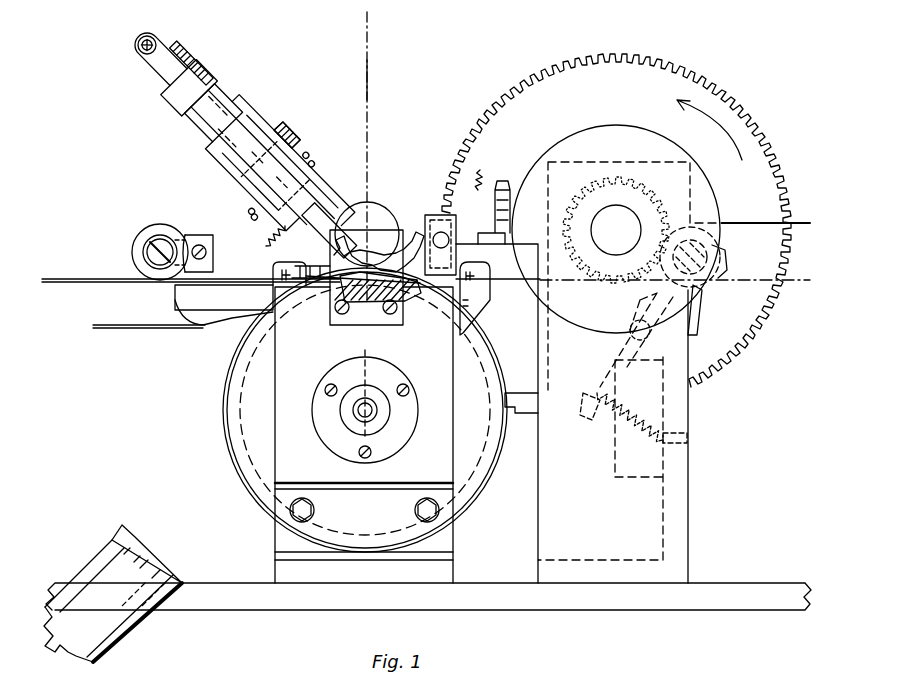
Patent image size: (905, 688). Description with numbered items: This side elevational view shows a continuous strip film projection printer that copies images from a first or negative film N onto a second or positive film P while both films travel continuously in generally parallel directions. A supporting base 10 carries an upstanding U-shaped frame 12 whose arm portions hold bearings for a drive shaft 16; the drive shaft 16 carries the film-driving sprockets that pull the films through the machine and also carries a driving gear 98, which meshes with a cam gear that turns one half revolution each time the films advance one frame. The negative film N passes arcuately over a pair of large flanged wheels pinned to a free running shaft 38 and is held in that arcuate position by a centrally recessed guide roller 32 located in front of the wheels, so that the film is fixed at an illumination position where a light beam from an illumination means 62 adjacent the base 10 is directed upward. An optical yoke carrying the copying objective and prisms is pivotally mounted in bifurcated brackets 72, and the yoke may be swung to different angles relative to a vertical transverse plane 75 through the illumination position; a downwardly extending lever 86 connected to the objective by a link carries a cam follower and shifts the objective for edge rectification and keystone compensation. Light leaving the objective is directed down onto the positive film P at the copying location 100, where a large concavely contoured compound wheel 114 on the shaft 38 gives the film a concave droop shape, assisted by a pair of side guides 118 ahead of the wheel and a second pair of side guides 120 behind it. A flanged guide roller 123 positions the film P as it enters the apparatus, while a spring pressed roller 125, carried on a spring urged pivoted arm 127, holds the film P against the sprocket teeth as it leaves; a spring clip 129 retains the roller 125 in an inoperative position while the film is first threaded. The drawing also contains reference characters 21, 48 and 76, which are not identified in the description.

The supporting base 10 is at (745, 583).
The U-shaped frame 12 is at (540, 529).
The drive shaft 16 is at (623, 218).
The drive gear 21 is at (562, 152).
The guide roller 32 is at (175, 297).
The free running shaft 38 is at (360, 414).
The thumb screw 48 is at (505, 180).
The illumination means 62 is at (108, 552).
The bifurcated brackets 72 is at (387, 322).
The vertical transverse plane 75 is at (372, 86).
The cylinder 76 is at (190, 22).
The lever 86 is at (300, 133).
The driving gear 98 is at (492, 133).
The copying location 100 is at (378, 250).
The concavely contoured compound wheel 114 is at (250, 462).
The side guides 118 is at (282, 263).
The second pair of side guides 120 is at (495, 292).
The flanged guide roller 123 is at (163, 226).
The spring pressed roller 125 is at (720, 273).
The spring urged pivoted arm 127 is at (617, 350).
The spring clip 129 is at (703, 320).
The positive film P is at (72, 287).
The negative film N is at (102, 343).